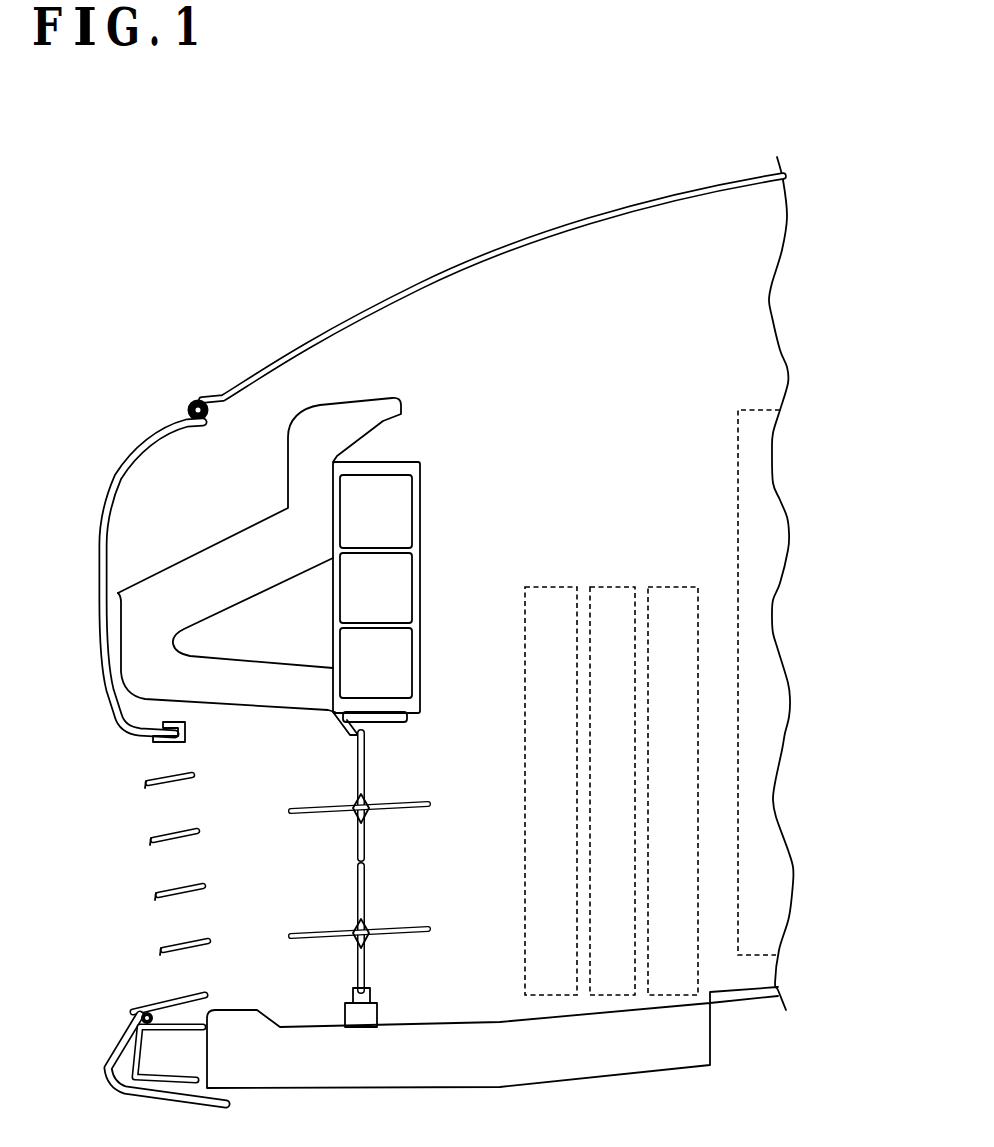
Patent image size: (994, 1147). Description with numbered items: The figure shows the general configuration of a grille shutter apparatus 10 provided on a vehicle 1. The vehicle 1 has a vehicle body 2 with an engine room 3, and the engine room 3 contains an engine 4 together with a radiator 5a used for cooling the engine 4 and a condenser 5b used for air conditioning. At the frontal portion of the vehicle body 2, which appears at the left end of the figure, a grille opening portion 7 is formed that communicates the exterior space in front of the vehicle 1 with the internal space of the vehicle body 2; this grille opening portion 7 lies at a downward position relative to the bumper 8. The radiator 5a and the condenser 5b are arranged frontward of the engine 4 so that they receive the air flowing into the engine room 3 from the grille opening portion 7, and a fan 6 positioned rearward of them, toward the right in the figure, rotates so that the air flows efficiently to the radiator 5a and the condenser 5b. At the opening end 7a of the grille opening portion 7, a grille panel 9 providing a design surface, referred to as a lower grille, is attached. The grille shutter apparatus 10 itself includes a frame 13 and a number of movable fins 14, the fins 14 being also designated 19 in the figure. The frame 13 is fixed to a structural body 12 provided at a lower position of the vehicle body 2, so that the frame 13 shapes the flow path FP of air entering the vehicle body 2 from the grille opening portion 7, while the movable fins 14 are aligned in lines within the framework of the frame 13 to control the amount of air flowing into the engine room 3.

The vehicle 1 is at (148, 181).
The vehicle body 2 is at (656, 195).
The engine room 3 is at (738, 250).
The engine 4 is at (737, 435).
The radiator 5a is at (609, 585).
The condenser 5b is at (548, 585).
The fan 6 is at (670, 585).
The grille opening portion 7 is at (100, 767).
The opening end 7a is at (148, 1008).
The bumper 8 is at (423, 427).
The grille panel 9 is at (148, 783).
The grille shutter apparatus 10 is at (320, 782).
The structural body 12 is at (390, 1070).
The frame 13 is at (343, 1004).
The movable fins 14 is at (367, 753).
The fastening pin 19 is at (367, 883).
The flow path FP is at (330, 871).